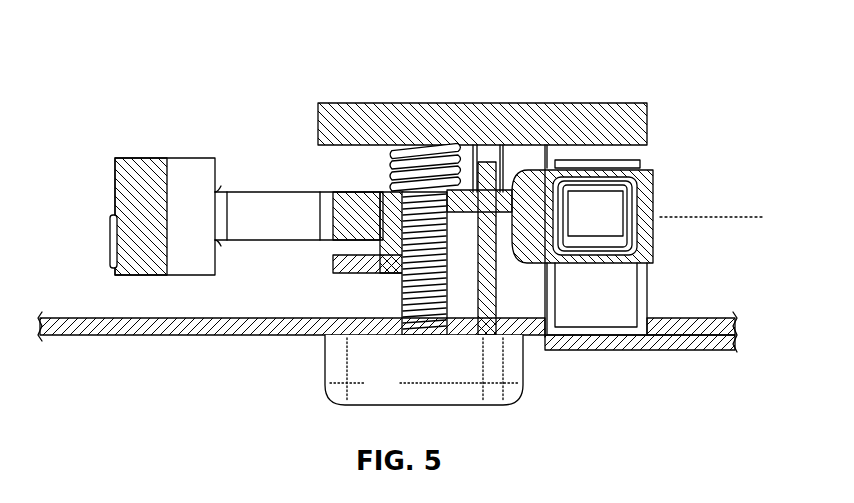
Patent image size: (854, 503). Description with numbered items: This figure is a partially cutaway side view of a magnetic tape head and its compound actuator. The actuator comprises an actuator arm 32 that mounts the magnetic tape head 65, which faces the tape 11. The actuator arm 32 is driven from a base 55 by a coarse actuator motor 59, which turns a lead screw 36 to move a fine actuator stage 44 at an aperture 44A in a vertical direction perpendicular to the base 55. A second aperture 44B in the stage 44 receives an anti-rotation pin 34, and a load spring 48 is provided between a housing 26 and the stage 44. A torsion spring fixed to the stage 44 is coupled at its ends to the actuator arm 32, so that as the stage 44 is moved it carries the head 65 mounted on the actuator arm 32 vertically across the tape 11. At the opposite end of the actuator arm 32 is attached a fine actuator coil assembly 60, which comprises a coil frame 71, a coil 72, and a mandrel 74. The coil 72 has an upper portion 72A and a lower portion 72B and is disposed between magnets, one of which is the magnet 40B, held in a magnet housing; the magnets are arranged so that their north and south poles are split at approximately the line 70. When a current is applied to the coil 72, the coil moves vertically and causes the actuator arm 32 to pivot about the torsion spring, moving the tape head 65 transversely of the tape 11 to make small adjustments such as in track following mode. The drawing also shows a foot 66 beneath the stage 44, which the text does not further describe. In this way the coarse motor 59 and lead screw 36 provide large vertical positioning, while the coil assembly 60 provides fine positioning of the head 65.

The tape 11 is at (112, 243).
The housing 26 is at (358, 103).
The actuator arm 32 is at (280, 190).
The anti-rotation pin 34 is at (487, 162).
The lead screw 36 is at (405, 288).
The magnet 40B is at (590, 160).
The fine actuator stage 44 is at (377, 220).
The aperture 44A is at (456, 214).
The aperture 44B is at (503, 160).
The load spring 48 is at (410, 166).
The base 55 is at (95, 337).
The coarse actuator motor 59 is at (325, 355).
The fine actuator coil assembly 60 is at (657, 187).
The magnetic tape head 65 is at (192, 158).
The foot 66 is at (333, 265).
The line 70 is at (755, 213).
The coil frame 71 is at (657, 250).
The coil 72 is at (655, 172).
The upper portion 72A is at (623, 190).
The lower portion 72B is at (598, 265).
The mandrel 74 is at (607, 225).